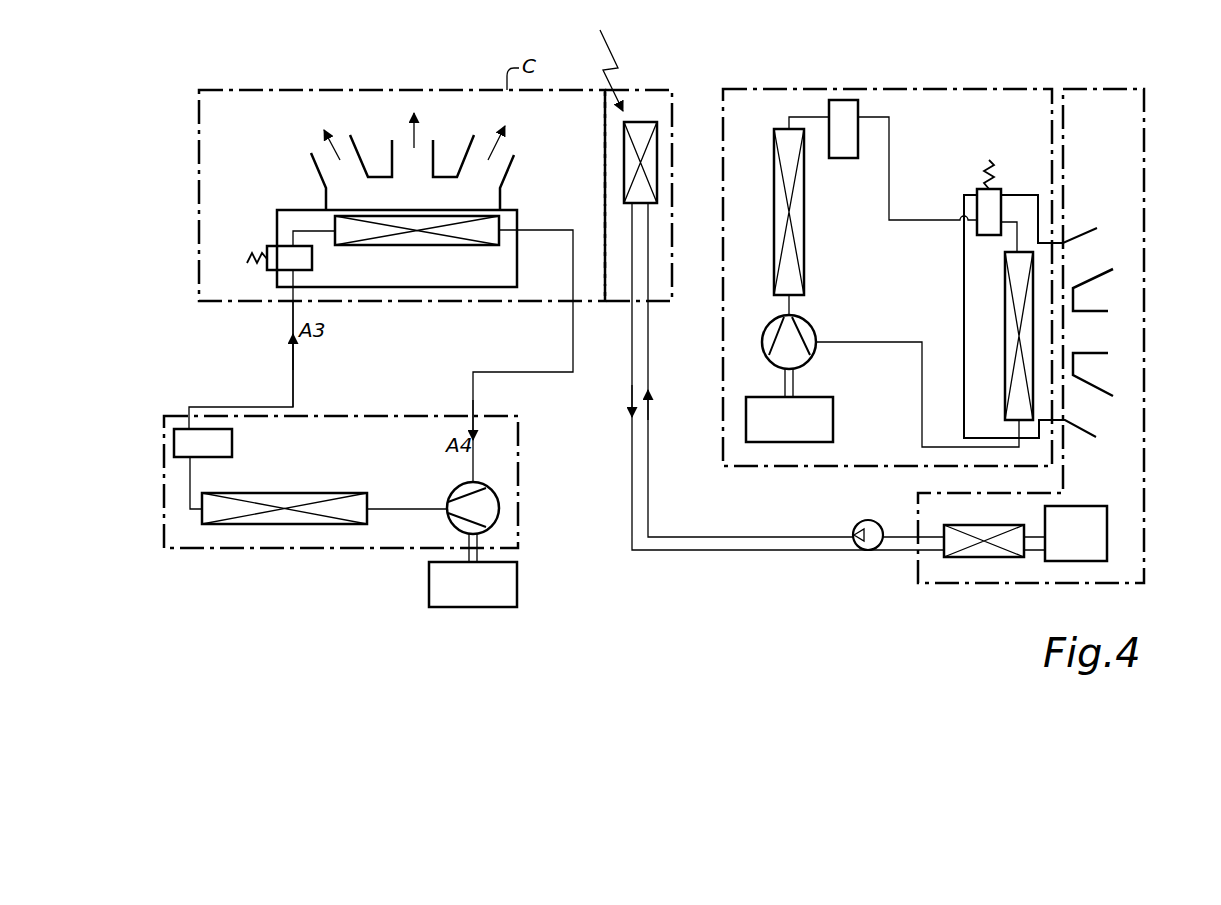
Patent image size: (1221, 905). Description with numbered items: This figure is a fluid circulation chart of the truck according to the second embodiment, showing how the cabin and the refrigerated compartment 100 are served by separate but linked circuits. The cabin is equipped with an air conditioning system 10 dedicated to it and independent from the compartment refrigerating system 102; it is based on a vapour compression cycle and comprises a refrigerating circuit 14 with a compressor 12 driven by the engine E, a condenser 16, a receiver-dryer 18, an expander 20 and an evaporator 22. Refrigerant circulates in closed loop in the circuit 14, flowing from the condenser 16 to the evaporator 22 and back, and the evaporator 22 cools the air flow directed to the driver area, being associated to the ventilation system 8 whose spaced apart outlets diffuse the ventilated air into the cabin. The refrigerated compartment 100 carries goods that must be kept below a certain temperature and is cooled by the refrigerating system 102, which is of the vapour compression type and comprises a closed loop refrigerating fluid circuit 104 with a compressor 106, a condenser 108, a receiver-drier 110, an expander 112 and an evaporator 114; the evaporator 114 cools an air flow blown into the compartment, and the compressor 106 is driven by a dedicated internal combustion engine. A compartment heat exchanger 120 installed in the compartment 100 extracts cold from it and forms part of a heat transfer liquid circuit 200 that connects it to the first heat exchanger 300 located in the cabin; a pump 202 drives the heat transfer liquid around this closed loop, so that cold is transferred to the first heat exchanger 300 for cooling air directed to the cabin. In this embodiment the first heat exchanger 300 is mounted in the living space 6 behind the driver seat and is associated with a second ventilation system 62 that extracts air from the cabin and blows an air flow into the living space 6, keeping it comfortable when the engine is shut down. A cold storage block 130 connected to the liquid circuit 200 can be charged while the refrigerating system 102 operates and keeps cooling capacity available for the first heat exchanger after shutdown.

The living space 6 is at (658, 97).
The ventilation system 8 is at (288, 219).
The air conditioning system 10 is at (367, 548).
The compressor 12 is at (487, 505).
The refrigerating circuit 14 is at (290, 378).
The condenser 16 is at (276, 524).
The receiver-dryer 18 is at (182, 444).
The expander 20 is at (277, 253).
The evaporator 22 is at (413, 245).
The second ventilation system 62 is at (603, 59).
The refrigerated compartment 100 is at (1095, 89).
The refrigerating system 102 is at (927, 89).
The refrigerating fluid circuit 104 is at (923, 214).
The compressor 106 is at (803, 333).
The condenser 108 is at (780, 128).
The receiver-drier 110 is at (843, 110).
The expander 112 is at (992, 212).
The evaporator 114 is at (1025, 407).
The compartment heat exchanger 120 is at (984, 557).
The cold storage block 130 is at (1097, 537).
The heat transfer liquid circuit 200 is at (698, 560).
The pump 202 is at (870, 522).
The first heat exchanger 300 is at (640, 160).